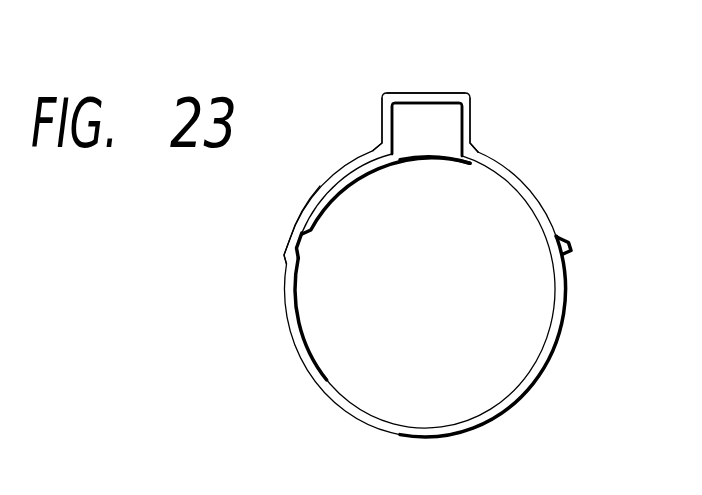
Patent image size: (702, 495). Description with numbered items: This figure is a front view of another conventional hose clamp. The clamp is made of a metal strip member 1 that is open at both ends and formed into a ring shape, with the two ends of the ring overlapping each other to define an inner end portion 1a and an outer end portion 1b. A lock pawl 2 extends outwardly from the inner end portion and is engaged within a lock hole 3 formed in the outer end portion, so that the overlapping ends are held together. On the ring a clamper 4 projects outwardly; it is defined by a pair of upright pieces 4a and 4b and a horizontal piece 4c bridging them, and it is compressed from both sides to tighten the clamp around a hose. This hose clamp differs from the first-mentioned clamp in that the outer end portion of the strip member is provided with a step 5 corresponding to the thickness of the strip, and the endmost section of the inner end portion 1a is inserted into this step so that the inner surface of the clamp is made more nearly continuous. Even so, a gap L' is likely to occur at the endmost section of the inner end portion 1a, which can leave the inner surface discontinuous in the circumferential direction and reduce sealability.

The strip member 1 is at (558, 340).
The inner end portion 1a is at (378, 170).
The outer end portion of band 1b is at (307, 203).
The lock pawl 2 is at (573, 246).
The lock hole 3 is at (558, 237).
The clamper 4 is at (466, 93).
The upright piece 4a is at (382, 118).
The upright piece 4b is at (470, 139).
The horizontal piece 4c is at (418, 93).
The step 5 is at (332, 201).
The gap L' is at (329, 273).